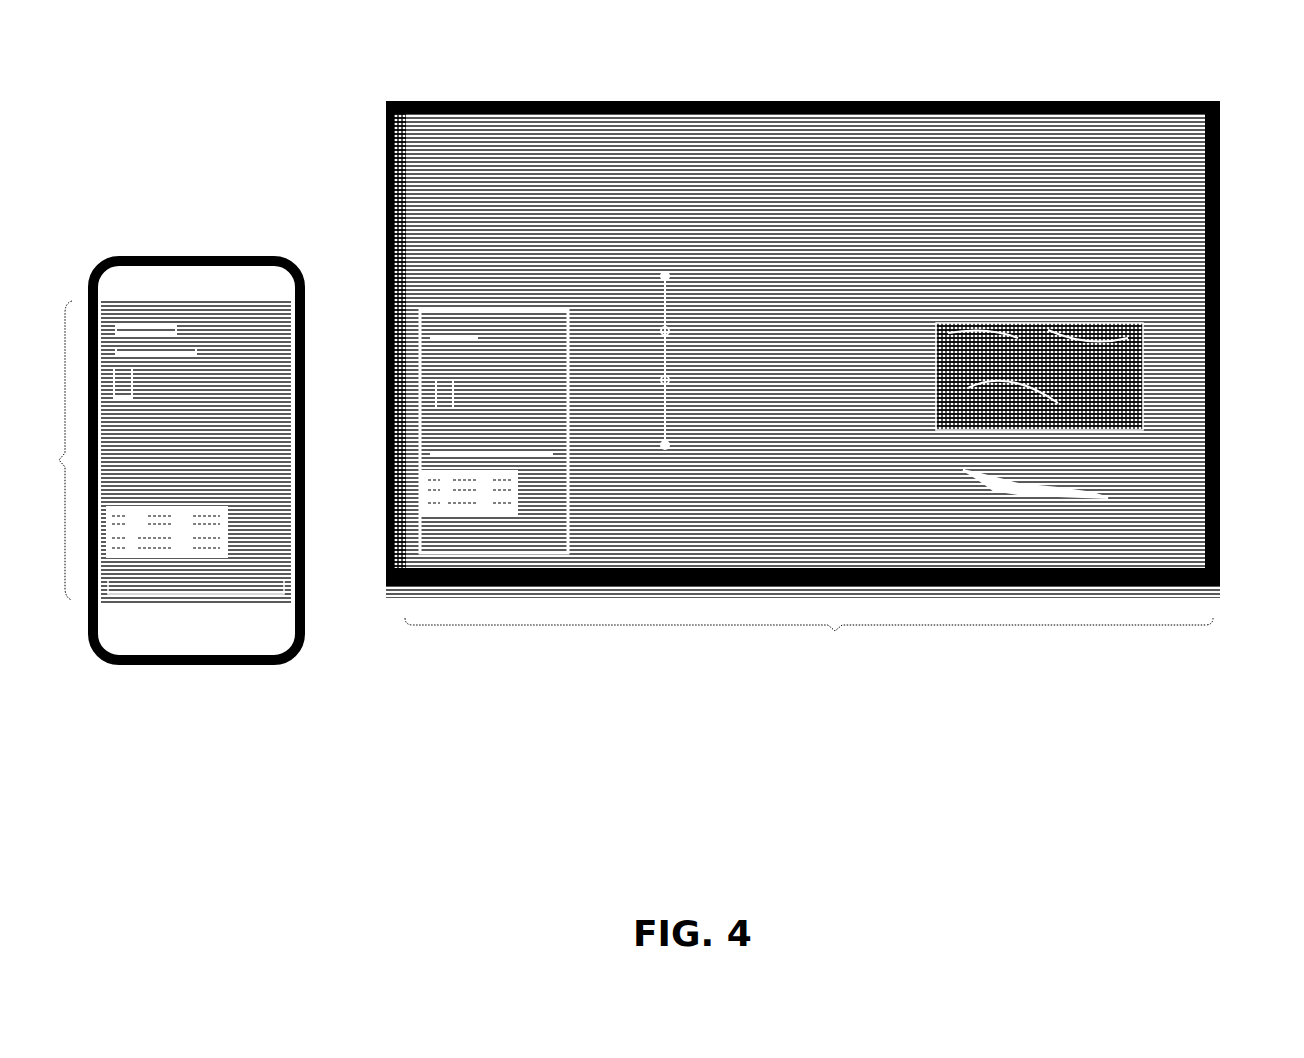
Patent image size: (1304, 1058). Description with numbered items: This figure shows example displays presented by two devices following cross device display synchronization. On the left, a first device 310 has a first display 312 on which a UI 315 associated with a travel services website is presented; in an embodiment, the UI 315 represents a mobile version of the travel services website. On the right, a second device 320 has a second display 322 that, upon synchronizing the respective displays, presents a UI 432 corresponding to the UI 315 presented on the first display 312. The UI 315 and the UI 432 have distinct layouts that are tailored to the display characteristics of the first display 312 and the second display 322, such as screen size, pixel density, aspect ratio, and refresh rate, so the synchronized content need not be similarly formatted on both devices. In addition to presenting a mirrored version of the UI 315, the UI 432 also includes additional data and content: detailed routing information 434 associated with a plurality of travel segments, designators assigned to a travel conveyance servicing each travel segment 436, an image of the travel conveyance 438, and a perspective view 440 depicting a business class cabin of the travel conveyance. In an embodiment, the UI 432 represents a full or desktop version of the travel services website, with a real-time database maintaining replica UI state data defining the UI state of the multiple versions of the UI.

The first device 310 is at (92, 262).
The first display 312 is at (43, 450).
The UI 315 is at (182, 538).
The second device 320 is at (380, 97).
The second display 322 is at (809, 647).
The UI 432 is at (443, 343).
The detailed routing information 434 is at (805, 248).
The designators assigned to a travel conveyance servicing each travel segment 436 is at (1093, 158).
The image of the travel conveyance 438 is at (1105, 498).
The perspective view 440 is at (1130, 318).